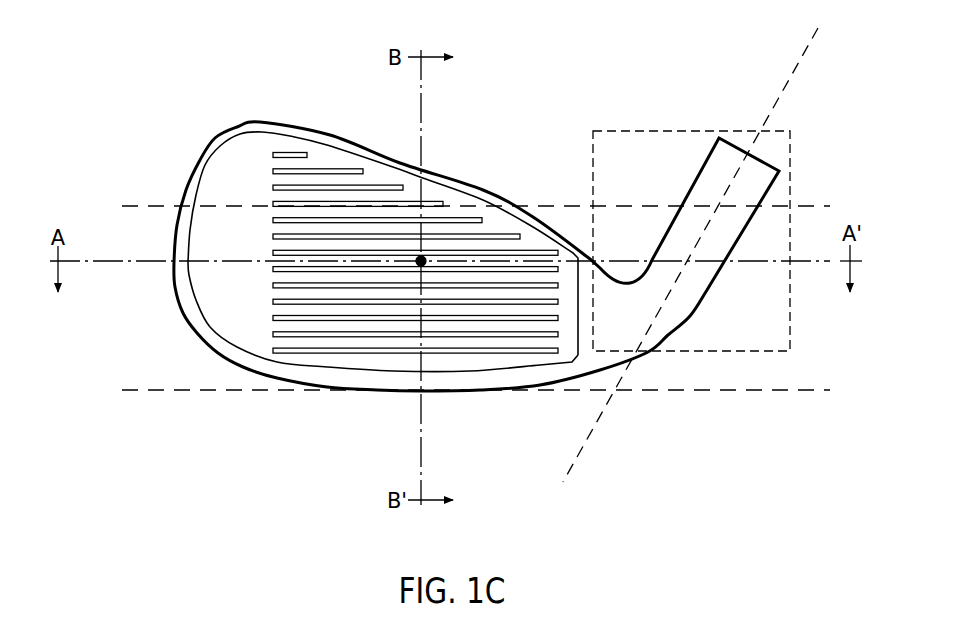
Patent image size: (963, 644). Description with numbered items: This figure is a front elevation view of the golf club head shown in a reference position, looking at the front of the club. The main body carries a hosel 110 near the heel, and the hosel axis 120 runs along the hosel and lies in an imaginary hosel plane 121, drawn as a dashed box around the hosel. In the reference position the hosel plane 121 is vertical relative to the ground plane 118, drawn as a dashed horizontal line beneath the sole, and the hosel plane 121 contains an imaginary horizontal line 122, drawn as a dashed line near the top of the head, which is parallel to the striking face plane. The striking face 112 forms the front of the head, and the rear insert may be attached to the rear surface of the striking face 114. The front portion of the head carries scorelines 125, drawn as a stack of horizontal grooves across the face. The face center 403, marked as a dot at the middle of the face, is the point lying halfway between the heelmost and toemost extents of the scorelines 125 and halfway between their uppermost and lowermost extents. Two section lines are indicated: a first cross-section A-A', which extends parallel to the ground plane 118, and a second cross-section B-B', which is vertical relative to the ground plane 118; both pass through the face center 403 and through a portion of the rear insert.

The hosel 110 is at (446, 246).
The striking face 112 is at (240, 179).
The striking face 114 is at (243, 319).
The ground plane 118 is at (175, 392).
The hosel axis 120 is at (802, 57).
The hosel plane 121 is at (646, 131).
The horizontal line 122 is at (826, 206).
The scorelines 125 is at (327, 170).
The face center 403 is at (426, 258).